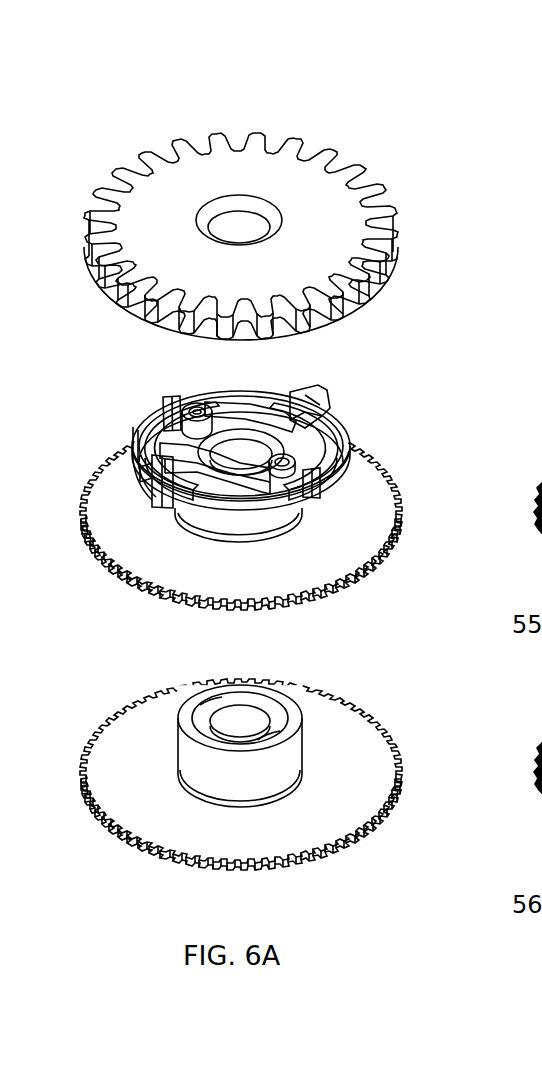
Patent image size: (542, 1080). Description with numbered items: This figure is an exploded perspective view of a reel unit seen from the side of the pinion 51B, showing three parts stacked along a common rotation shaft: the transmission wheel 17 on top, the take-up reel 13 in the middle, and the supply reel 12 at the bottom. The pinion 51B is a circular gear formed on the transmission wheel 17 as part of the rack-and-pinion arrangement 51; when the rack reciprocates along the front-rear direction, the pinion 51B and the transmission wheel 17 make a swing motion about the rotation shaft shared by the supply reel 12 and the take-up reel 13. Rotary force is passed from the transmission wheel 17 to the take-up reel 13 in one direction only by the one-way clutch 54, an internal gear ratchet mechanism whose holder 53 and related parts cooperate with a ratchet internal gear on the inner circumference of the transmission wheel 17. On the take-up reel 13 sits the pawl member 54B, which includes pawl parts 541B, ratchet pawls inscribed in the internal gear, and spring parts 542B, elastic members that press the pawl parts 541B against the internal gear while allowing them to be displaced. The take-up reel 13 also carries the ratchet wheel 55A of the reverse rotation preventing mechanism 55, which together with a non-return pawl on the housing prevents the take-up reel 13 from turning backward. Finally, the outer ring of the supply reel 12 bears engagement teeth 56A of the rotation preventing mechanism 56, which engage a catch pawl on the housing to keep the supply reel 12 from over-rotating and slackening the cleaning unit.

The transmission wheel 17 is at (226, 200).
The pinion 51B is at (323, 152).
The rack and pinion mechanism 51 is at (249, 205).
The take-up reel 13 is at (289, 473).
The spring part 542B is at (245, 398).
The pawl member 54B is at (287, 422).
The pawl part 541B is at (315, 392).
The one-way clutch 54 is at (337, 439).
The pawl holder 53 is at (337, 439).
The ratchet wheel 55A is at (380, 502).
The reverse rotation preventing mechanism 55 is at (277, 512).
The supply reel 12 is at (256, 739).
The engagement teeth 56A is at (380, 758).
The rotation preventing mechanism 56 is at (277, 769).